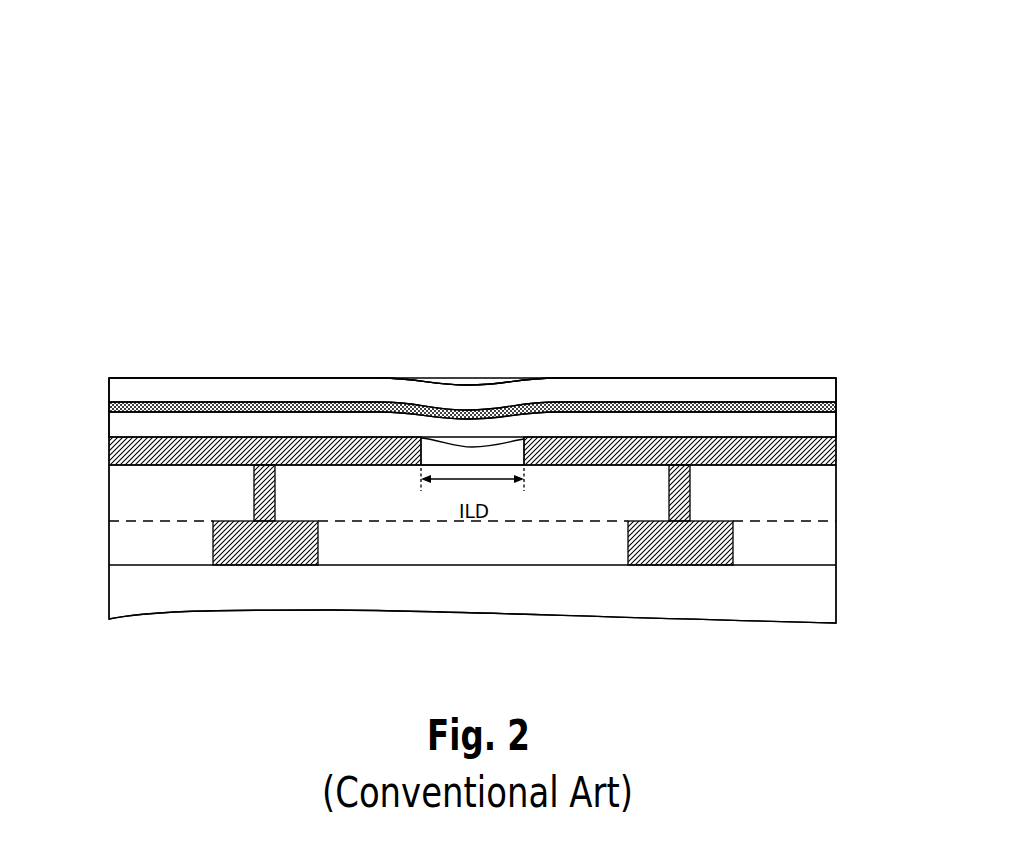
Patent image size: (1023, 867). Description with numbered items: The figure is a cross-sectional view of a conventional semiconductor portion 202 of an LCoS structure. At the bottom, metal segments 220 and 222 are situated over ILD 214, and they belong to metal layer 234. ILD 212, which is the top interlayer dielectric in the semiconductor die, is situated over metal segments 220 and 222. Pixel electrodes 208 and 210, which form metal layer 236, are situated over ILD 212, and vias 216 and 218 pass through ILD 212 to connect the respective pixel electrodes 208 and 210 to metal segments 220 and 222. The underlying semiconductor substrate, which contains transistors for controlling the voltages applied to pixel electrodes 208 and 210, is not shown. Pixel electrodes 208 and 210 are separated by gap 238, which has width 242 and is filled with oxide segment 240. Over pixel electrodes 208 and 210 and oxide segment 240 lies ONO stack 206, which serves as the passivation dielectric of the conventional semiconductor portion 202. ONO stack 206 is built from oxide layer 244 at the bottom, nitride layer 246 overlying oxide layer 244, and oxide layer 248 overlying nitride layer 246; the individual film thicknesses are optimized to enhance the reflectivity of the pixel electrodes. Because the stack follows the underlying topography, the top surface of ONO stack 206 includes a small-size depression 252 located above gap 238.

The conventional semiconductor portion 202 is at (925, 131).
The ONO stack 206 is at (840, 440).
The pixel electrode 208 is at (221, 456).
The pixel electrode 210 is at (627, 468).
The ILD 212 is at (840, 495).
The ILD 214 is at (820, 598).
The via 216 is at (278, 490).
The via 218 is at (692, 493).
The metal segment 220 is at (272, 552).
The metal segment 222 is at (692, 558).
The metal layer 234 is at (840, 544).
The metal layer 236 is at (840, 453).
The gap 238 is at (497, 490).
The oxide segment 240 is at (472, 449).
The width 242 is at (448, 483).
The oxide layer 244 is at (125, 423).
The nitride layer 246 is at (125, 408).
The oxide layer 248 is at (125, 390).
The depression 252 is at (470, 378).